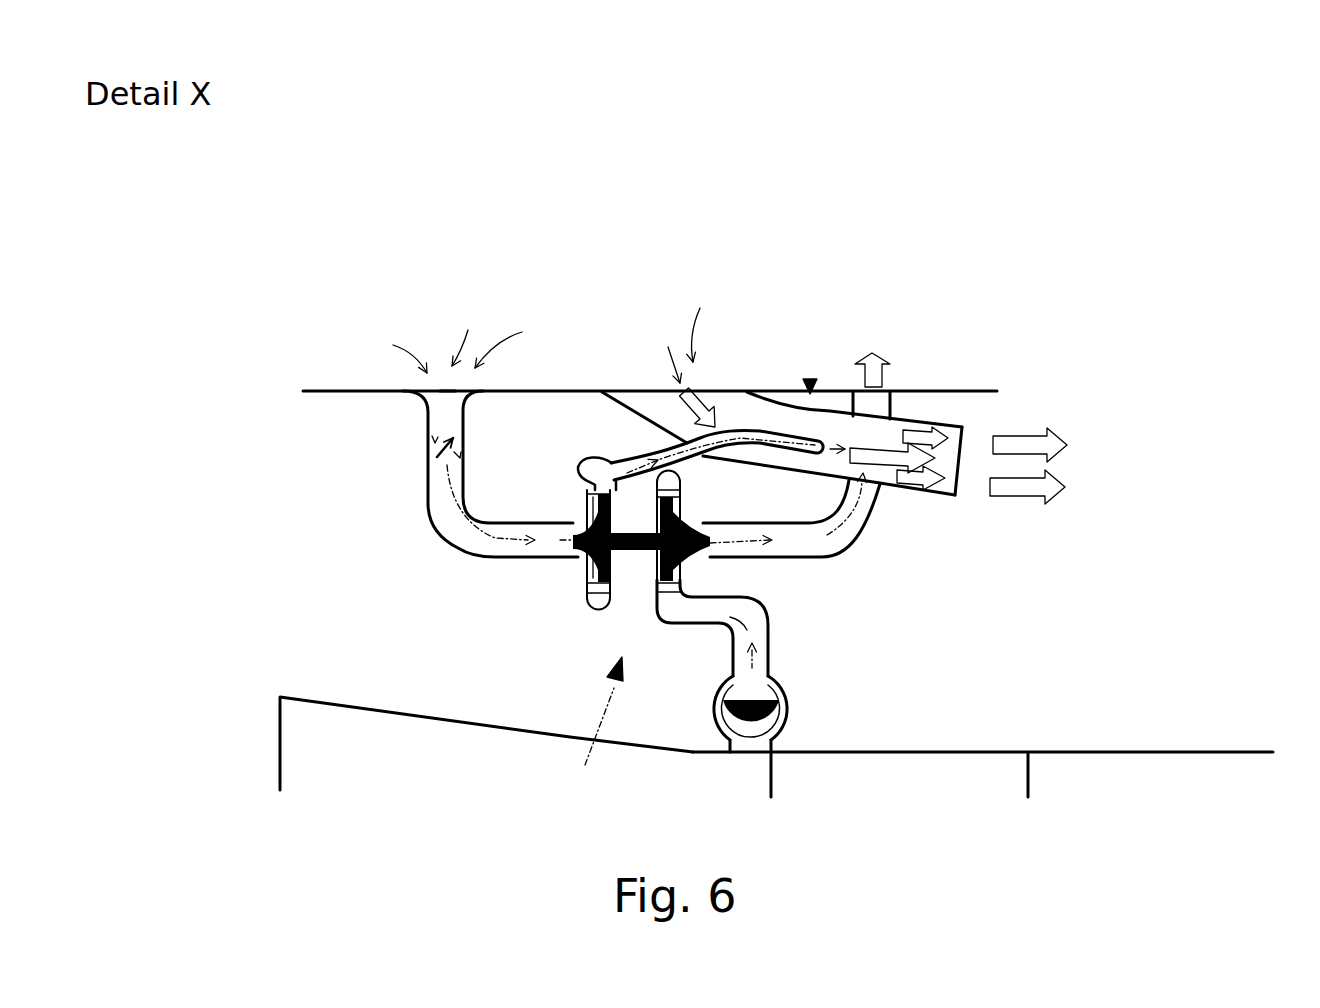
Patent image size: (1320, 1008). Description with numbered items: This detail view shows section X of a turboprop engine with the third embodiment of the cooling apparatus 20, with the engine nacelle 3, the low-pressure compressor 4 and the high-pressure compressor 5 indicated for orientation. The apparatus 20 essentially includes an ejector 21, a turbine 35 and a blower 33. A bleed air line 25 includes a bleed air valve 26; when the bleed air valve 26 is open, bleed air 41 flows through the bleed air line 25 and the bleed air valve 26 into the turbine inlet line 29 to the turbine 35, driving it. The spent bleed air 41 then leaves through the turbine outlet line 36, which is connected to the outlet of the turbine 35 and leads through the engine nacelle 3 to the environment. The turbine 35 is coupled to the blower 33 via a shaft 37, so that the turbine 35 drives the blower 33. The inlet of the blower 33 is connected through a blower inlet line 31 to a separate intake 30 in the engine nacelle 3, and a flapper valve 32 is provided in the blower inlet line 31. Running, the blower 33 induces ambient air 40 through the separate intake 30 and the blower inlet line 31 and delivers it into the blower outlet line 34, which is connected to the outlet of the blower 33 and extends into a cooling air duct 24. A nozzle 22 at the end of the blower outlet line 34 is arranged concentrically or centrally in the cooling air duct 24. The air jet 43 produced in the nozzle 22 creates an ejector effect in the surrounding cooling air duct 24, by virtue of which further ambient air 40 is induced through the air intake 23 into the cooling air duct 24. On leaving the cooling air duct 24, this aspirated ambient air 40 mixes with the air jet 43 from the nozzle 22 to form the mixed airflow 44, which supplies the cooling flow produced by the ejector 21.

The engine nacelle 3 is at (372, 388).
The low-pressure compressor 4 is at (443, 753).
The high-pressure compressor 5 is at (990, 767).
The apparatus 20 is at (575, 740).
The ejector 21 is at (810, 380).
The nozzle 22 is at (813, 440).
The air intake 23 is at (720, 390).
The cooling air duct 24 is at (765, 402).
The bleed air line 25 is at (773, 742).
The bleed air valve 26 is at (753, 700).
The turbine inlet line 29 is at (773, 638).
The separate intake 30 is at (445, 388).
The blower inlet line 31 is at (432, 495).
The flapper valve 32 is at (430, 444).
The blower 33 is at (590, 565).
The blower outlet line 34 is at (642, 386).
The turbine 35 is at (653, 573).
The turbine outlet line 36 is at (873, 513).
The shaft 37 is at (630, 530).
The ambient air 40 is at (468, 330).
The bleed air 41 is at (875, 365).
The air jet 43 is at (867, 455).
The mixed airflow 44 is at (1032, 486).